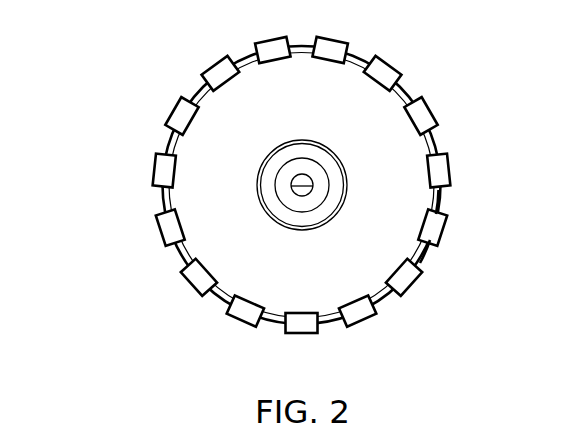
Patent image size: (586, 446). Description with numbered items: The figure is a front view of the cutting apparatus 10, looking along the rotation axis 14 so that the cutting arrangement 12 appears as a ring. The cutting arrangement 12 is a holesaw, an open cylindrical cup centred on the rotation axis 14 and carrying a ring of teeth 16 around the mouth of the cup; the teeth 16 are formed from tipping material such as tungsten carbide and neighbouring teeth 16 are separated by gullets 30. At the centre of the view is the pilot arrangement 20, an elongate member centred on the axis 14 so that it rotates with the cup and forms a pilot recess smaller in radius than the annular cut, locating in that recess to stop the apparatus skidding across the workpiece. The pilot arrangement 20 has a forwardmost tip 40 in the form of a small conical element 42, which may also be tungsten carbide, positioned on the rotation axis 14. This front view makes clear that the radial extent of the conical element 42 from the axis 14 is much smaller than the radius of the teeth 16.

The cutting apparatus 10 is at (118, 122).
The cutting arrangement 12 is at (448, 156).
The rotation axis 14 is at (299, 184).
The teeth 16 is at (375, 306).
The pilot arrangement 20 is at (302, 230).
The gullets 30 is at (443, 203).
The forwardmost tip 40 is at (330, 188).
The conical element 42 is at (291, 192).